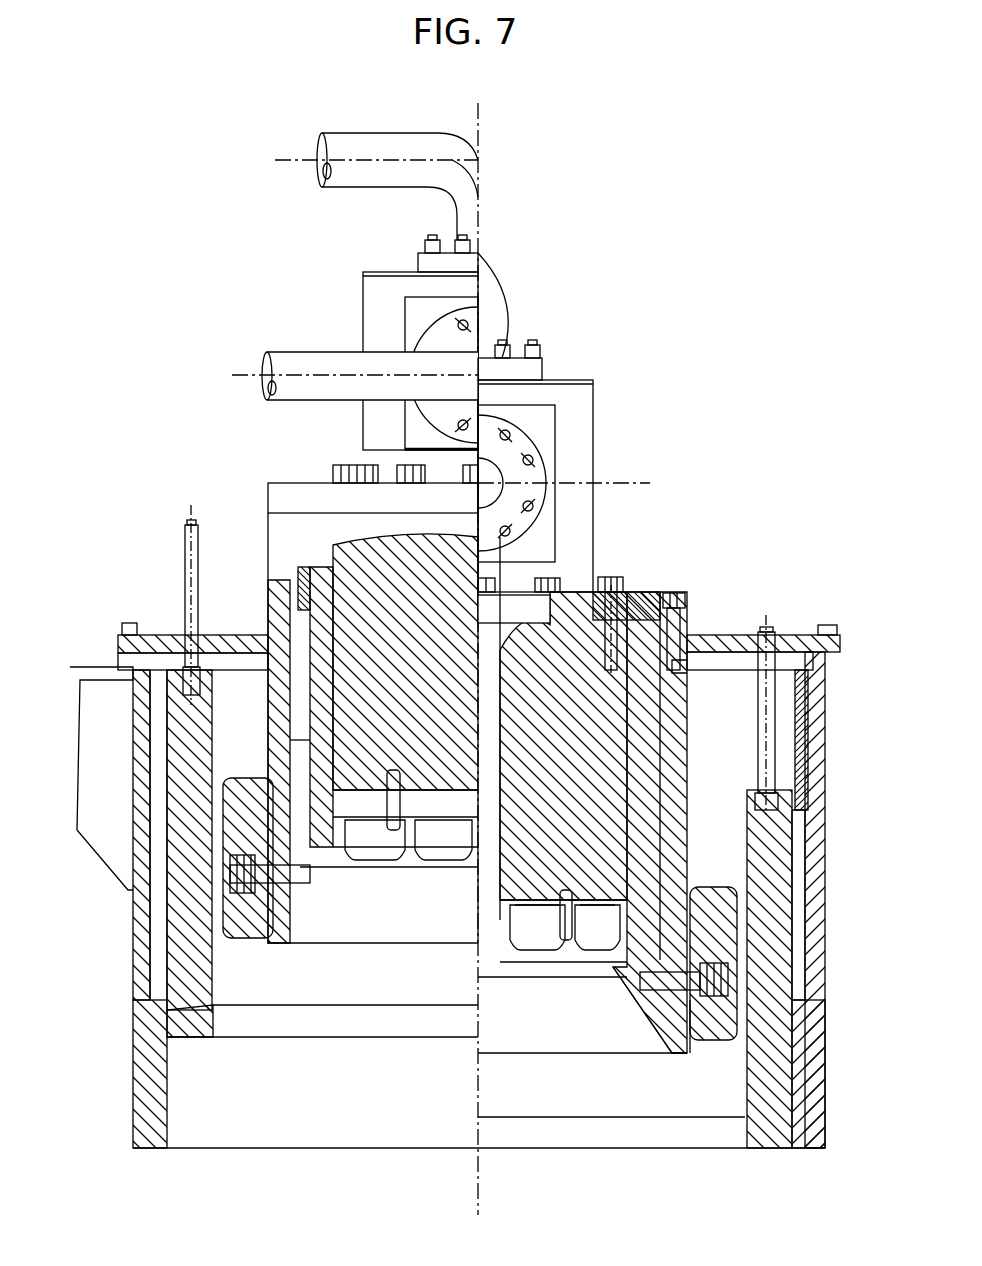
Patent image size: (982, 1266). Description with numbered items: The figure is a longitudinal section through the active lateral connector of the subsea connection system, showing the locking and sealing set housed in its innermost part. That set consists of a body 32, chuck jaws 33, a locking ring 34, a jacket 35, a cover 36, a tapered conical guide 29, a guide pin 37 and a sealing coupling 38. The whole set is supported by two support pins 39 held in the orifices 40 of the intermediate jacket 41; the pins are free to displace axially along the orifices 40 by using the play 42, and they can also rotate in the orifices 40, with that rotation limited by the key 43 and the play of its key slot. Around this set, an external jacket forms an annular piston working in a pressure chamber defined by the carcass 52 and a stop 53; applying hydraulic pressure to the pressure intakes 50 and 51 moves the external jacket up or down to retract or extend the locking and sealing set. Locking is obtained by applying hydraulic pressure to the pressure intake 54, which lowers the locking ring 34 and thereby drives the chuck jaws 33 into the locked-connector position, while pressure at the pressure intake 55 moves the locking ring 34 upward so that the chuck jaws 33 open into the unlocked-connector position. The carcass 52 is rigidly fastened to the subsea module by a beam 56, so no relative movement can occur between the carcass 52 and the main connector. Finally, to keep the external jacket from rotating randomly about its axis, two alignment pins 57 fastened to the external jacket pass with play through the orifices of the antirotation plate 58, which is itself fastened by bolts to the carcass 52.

The tapered conical guide 29 is at (655, 1010).
The body 32 is at (593, 405).
The chuck jaws 33 is at (336, 790).
The locking ring 34 is at (700, 762).
The jacket 35 is at (685, 862).
The cover 36 is at (622, 592).
The guide pin 37 is at (565, 900).
The sealing coupling 38 is at (517, 905).
The support pins 39 is at (692, 995).
The orifices 40 is at (730, 975).
The intermediate jacket 41 is at (233, 910).
The play 42 is at (230, 928).
The key 43 is at (690, 960).
The pressure intake 50 is at (808, 1003).
The pressure intake 51 is at (810, 820).
The carcass 52 is at (820, 1110).
The stop 53 is at (808, 744).
The pressure intake 54 is at (688, 662).
The pressure intake 55 is at (268, 583).
The beam 56 is at (78, 667).
The alignment pins 57 is at (185, 565).
The antirotation plate 58 is at (790, 635).